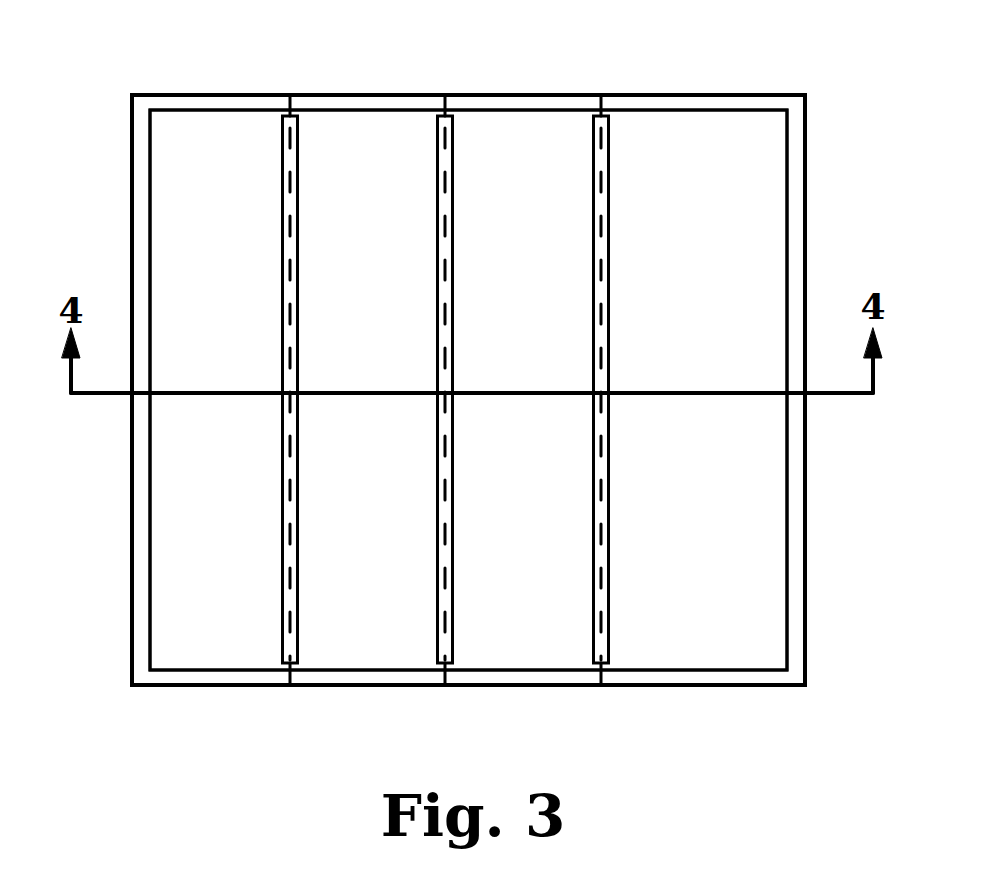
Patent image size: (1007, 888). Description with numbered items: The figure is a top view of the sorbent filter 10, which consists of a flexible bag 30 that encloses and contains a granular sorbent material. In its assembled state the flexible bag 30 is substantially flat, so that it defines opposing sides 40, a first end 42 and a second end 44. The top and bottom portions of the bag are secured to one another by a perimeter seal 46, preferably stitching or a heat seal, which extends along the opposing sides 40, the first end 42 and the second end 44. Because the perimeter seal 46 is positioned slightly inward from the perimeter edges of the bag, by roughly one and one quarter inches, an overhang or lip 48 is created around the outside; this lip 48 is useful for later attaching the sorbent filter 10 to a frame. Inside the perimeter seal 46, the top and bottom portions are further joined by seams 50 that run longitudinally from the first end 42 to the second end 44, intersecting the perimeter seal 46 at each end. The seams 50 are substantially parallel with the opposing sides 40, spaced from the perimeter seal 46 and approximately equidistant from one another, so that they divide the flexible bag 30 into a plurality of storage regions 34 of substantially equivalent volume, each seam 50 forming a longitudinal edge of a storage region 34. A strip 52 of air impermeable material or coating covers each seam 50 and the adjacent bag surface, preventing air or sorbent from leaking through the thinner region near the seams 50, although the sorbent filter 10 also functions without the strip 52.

The sorbent filter 10 is at (871, 41).
The flexible bag 30 is at (753, 500).
The storage regions 34 is at (242, 128).
The opposing sides 40 is at (805, 232).
The first end 42 is at (532, 95).
The second end 44 is at (358, 687).
The perimeter seal 46 is at (682, 110).
The lip 48 is at (677, 100).
The seams 50 is at (290, 318).
The strip 52 is at (283, 556).